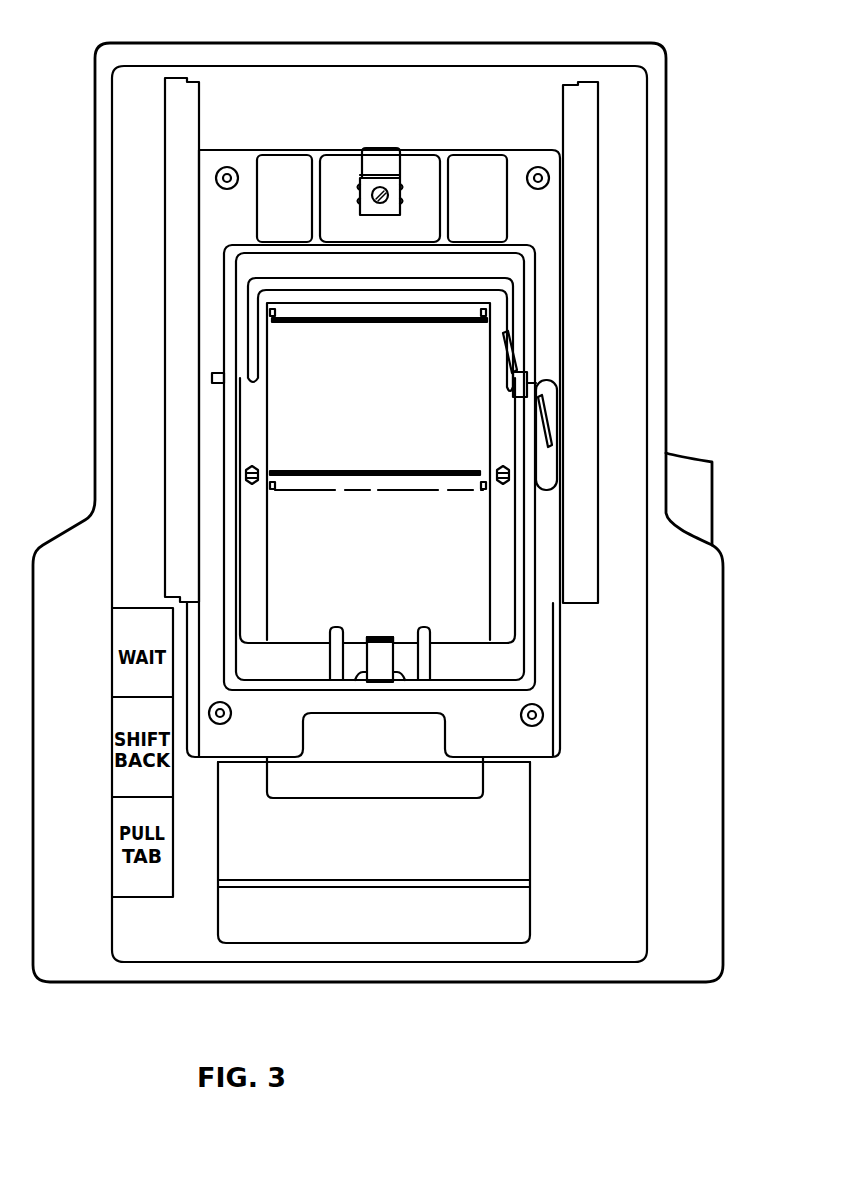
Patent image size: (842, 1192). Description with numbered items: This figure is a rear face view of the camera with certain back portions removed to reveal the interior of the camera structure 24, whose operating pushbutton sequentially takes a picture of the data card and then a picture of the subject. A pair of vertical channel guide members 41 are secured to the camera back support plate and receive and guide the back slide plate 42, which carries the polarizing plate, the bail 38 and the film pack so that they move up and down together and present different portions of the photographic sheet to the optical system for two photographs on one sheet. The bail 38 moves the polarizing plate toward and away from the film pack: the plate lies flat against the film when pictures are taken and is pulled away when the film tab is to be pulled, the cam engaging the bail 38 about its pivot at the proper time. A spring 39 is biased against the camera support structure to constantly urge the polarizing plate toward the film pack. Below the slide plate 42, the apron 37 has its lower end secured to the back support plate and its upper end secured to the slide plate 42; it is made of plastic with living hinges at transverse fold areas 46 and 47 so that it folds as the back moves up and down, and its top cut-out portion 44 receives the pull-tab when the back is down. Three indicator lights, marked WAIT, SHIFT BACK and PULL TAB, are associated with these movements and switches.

The camera structure 24 is at (678, 457).
The apron 37 is at (500, 867).
The bail 38 is at (552, 381).
The spring 39 is at (513, 347).
The vertical channel guide members 41 is at (176, 162).
The back slide plate 42 is at (524, 163).
The top cut-out portion 44 is at (450, 783).
The transverse fold area 46 is at (513, 762).
The transverse fold area 47 is at (513, 888).